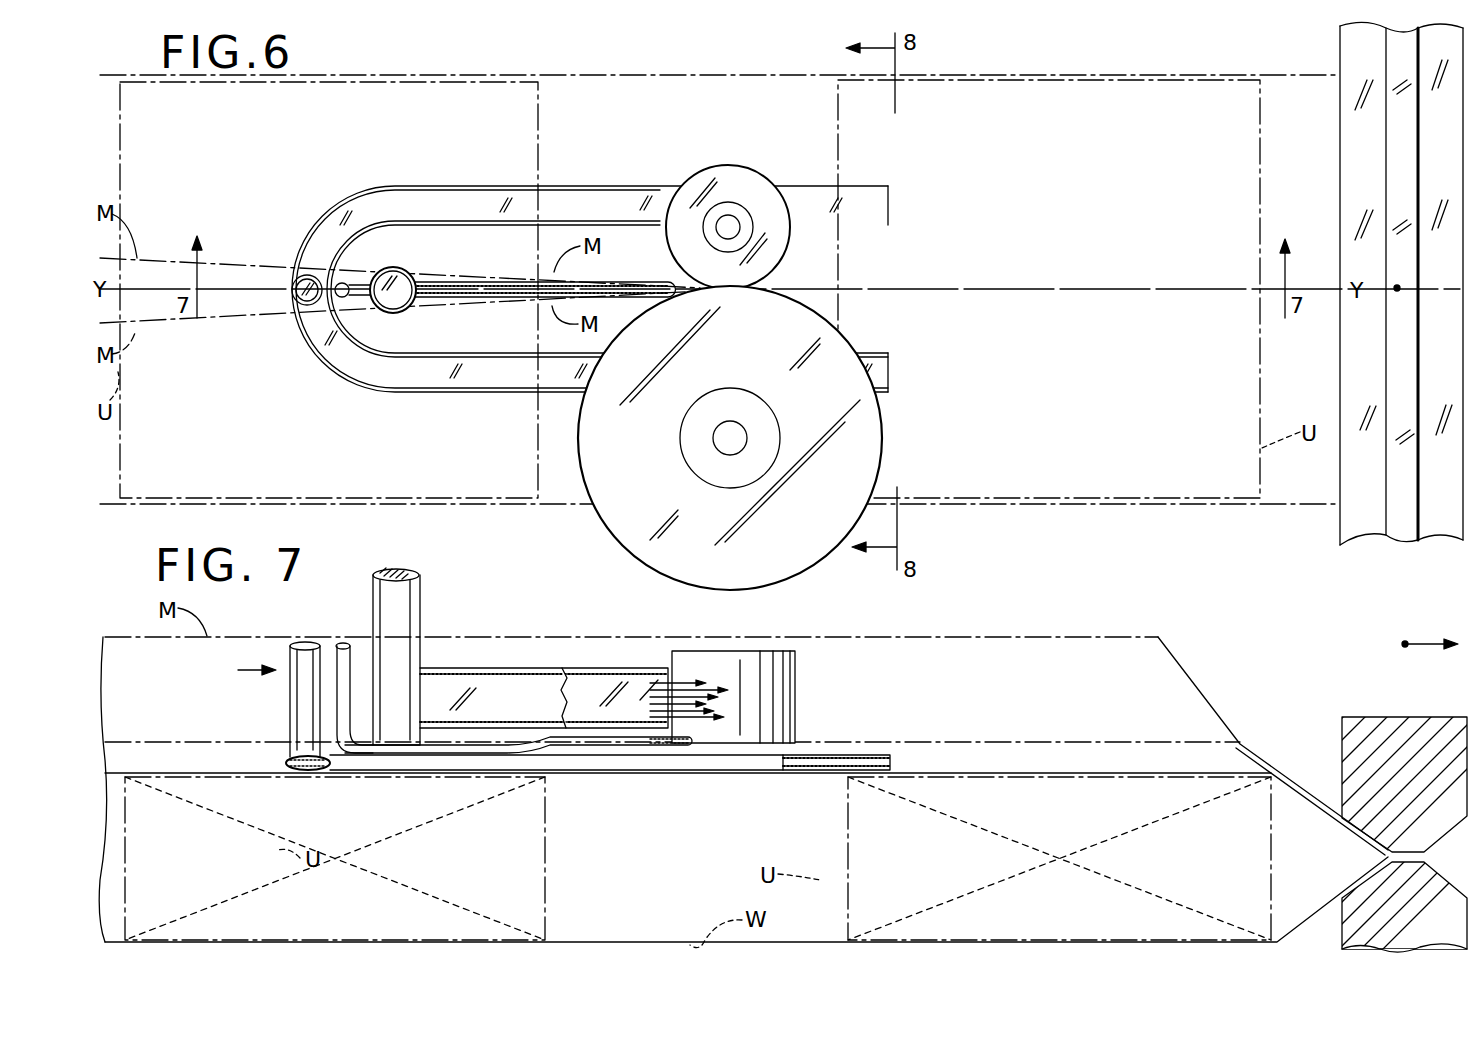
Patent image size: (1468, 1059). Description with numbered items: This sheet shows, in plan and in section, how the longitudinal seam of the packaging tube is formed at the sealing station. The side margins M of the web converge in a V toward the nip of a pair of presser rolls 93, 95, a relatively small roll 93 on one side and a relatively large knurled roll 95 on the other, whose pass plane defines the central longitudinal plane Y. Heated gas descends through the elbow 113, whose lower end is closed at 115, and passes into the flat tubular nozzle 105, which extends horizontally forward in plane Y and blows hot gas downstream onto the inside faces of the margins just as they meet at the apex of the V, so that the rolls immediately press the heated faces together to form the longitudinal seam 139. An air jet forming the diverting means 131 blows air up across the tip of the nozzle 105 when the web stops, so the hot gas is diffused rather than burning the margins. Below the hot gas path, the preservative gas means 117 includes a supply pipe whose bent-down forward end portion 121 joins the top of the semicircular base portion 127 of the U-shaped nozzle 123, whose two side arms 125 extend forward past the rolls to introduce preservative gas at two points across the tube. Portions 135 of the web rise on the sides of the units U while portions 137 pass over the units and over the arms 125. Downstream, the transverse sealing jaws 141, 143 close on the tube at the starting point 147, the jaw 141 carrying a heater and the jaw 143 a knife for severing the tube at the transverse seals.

In FIG. 6, the roll 93 is at (788, 243).
In FIG. 7, the roll 93 is at (797, 667).
In FIG. 6, the roll 95 is at (883, 440).
In FIG. 6, the nozzle 105 is at (512, 303).
In FIG. 7, the nozzle 105 is at (495, 664).
In FIG. 6, the elbow 113 is at (392, 313).
In FIG. 7, the elbow 113 is at (422, 583).
In FIG. 7, the closed lower end of elbow 115 is at (395, 748).
In FIG. 7, the means for introducing preservative gas 117 is at (237, 671).
In FIG. 7, the bent-down forward end portion of pipe 121 is at (290, 697).
In FIG. 6, the nozzle 123 is at (452, 178).
In FIG. 6, the side arms 125 is at (890, 205).
In FIG. 7, the side arms 125 is at (855, 755).
In FIG. 6, the semicircular base portion 127 is at (303, 233).
In FIG. 7, the semicircular base portion 127 is at (287, 762).
In FIG. 6, the means for diverting hot gas 131 is at (344, 283).
In FIG. 7, the means for diverting hot gas 131 is at (338, 658).
In FIG. 6, the portions of the web 135 is at (1183, 73).
In FIG. 7, the portions of the web 137 is at (1068, 703).
In FIG. 6, the longitudinal seam 139 is at (1035, 300).
In FIG. 7, the longitudinal seam 139 is at (1073, 636).
In FIG. 7, the transverse sealing jaw 141 is at (1342, 926).
In FIG. 6, the transverse sealing jaw 143 is at (1340, 520).
In FIG. 7, the transverse sealing jaw 143 is at (1342, 745).
In FIG. 6, the starting point 147 is at (1397, 291).
In FIG. 7, the starting point 147 is at (1405, 642).